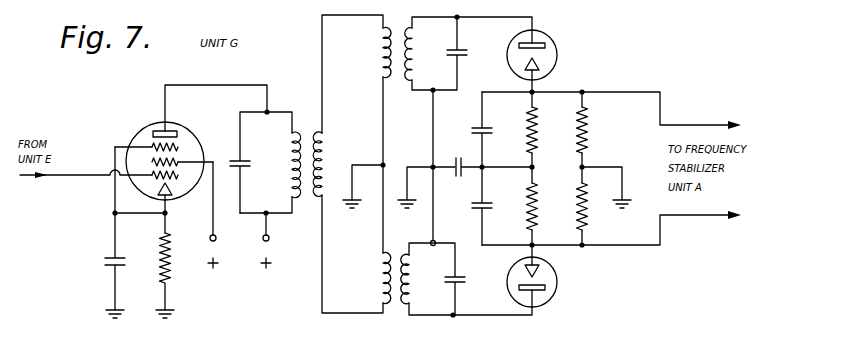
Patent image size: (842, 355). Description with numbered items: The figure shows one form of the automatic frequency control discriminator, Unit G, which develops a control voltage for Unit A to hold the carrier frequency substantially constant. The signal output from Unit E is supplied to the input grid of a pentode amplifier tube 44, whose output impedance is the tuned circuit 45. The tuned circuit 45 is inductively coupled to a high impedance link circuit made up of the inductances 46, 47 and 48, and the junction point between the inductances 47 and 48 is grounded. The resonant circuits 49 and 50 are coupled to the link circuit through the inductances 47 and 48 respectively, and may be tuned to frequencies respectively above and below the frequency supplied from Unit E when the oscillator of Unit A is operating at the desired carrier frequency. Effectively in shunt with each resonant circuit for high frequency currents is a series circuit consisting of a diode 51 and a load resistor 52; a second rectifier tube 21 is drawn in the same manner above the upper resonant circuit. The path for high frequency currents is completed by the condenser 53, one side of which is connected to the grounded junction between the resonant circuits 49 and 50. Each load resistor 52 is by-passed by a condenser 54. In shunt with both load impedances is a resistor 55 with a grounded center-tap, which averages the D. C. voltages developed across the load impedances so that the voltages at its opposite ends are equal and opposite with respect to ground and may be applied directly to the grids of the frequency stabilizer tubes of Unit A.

The pentode amplifier tube 44 is at (147, 131).
The tuned circuit 45 is at (288, 172).
The inductance 46 is at (348, 164).
The inductance 47 is at (373, 96).
The inductance 48 is at (370, 234).
The resonant circuit 49 is at (436, 53).
The resonant circuit 50 is at (433, 279).
The rectifier tube (upper) 21 is at (554, 48).
The diode 51 is at (554, 283).
The load resistor 52 is at (520, 168).
The condenser 53 is at (464, 158).
The condenser 54 is at (493, 168).
The resistor 55 is at (589, 135).